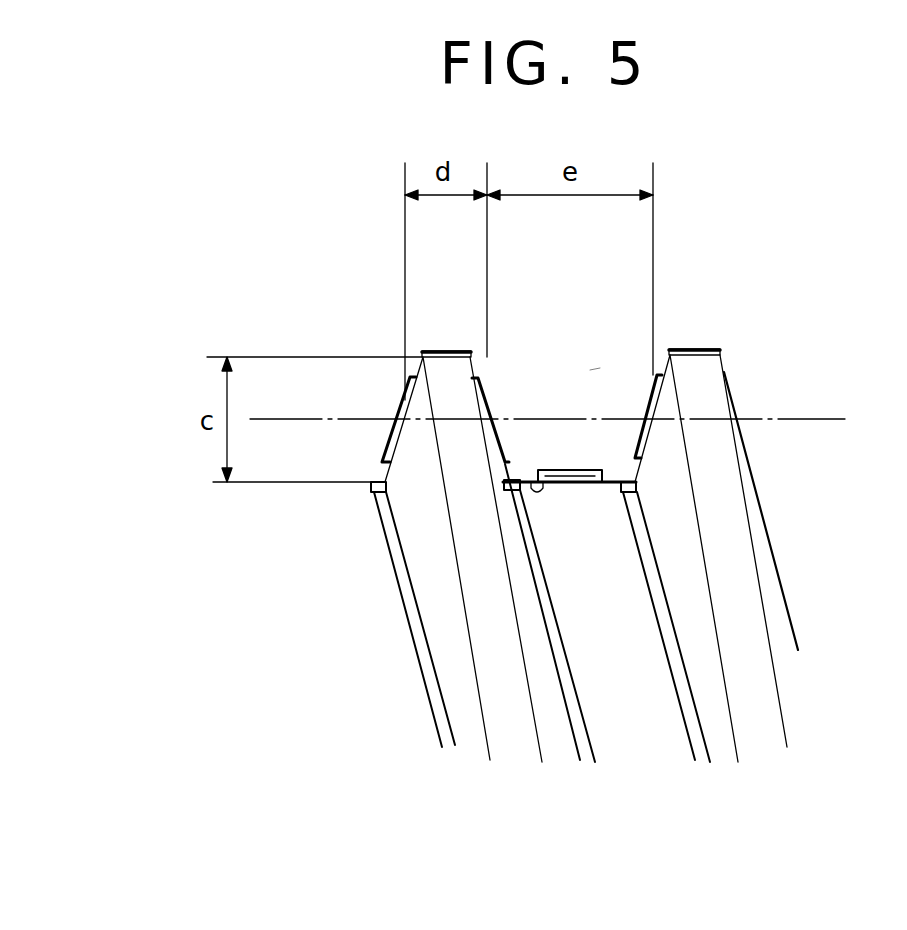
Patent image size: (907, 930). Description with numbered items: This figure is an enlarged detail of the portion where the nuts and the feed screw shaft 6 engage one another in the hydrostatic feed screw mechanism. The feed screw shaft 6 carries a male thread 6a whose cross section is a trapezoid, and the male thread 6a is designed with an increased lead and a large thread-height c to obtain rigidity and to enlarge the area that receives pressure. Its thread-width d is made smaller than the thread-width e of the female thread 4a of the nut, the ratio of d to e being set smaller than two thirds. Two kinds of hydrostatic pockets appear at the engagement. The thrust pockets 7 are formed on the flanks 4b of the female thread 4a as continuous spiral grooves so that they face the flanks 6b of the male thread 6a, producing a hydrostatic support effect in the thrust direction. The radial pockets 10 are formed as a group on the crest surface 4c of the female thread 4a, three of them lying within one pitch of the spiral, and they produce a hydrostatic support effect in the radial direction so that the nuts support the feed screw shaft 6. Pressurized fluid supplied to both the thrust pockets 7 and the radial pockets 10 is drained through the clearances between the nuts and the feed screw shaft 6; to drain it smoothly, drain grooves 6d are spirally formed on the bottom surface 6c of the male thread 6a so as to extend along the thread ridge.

The female thread 4a is at (590, 370).
The flanks of the female thread 4b is at (531, 482).
The crest surface of the female thread 4c is at (552, 470).
The feed screw shaft 6 is at (728, 573).
The male thread 6a is at (452, 393).
The flanks of the male thread 6b is at (405, 448).
The bottom surface of the male thread 6c is at (648, 657).
The drain grooves 6d is at (627, 490).
The thrust pockets 7 is at (482, 410).
The radial pockets 10 is at (593, 470).